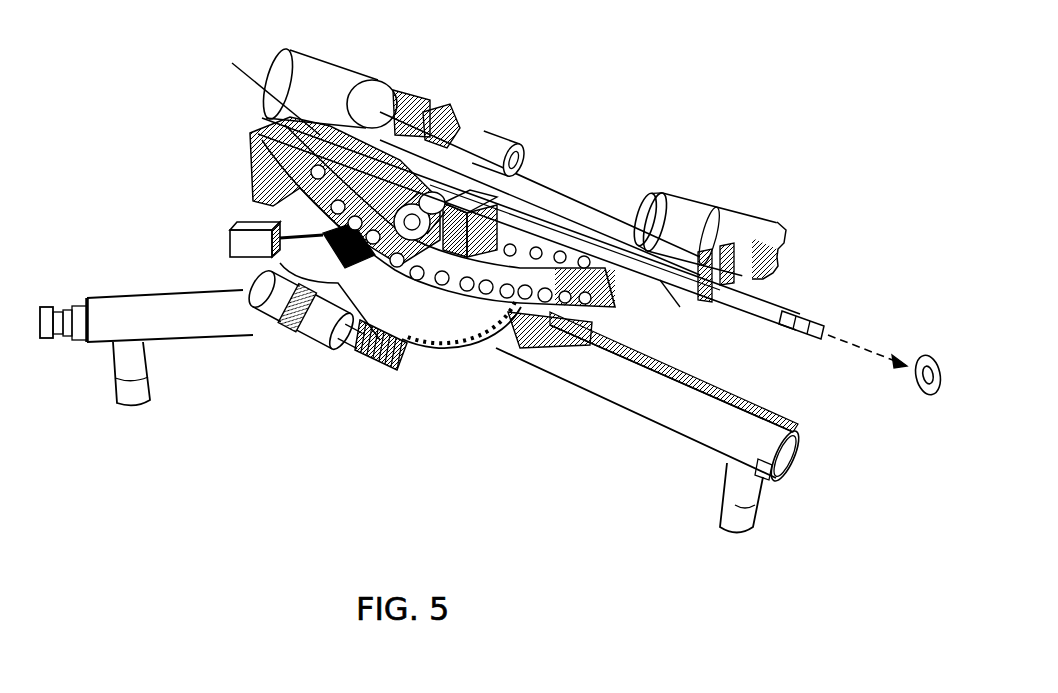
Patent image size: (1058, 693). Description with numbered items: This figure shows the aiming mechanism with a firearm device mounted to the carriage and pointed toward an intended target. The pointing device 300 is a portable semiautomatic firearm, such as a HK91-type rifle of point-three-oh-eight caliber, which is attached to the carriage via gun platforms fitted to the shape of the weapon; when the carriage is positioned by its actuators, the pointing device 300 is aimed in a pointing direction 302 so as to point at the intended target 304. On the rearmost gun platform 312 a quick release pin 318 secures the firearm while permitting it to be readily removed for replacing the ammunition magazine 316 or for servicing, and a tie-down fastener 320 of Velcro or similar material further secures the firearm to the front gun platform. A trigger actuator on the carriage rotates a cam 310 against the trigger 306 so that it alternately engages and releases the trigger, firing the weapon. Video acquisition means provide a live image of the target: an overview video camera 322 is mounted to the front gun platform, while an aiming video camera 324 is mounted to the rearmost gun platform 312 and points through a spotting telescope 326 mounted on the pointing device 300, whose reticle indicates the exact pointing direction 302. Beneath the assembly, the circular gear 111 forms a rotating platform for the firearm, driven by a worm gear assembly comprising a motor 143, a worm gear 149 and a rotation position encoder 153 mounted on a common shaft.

The circular gear 111 is at (420, 353).
The motor 143 is at (317, 327).
The worm gear 149 is at (368, 360).
The rotation position encoder 153 is at (268, 303).
The pointing device 300 is at (560, 210).
The pointing direction 302 is at (915, 348).
The intended target 304 is at (930, 357).
The trigger 306 is at (488, 140).
The cam 310 is at (420, 150).
The gun platform 312 is at (290, 143).
The ammunition magazine 316 is at (477, 270).
The quick release pin 318 is at (254, 86).
The tie-down fastener 320 is at (610, 214).
The overview video camera 322 is at (700, 208).
The aiming video camera 324 is at (330, 72).
The spotting telescope 326 is at (515, 147).